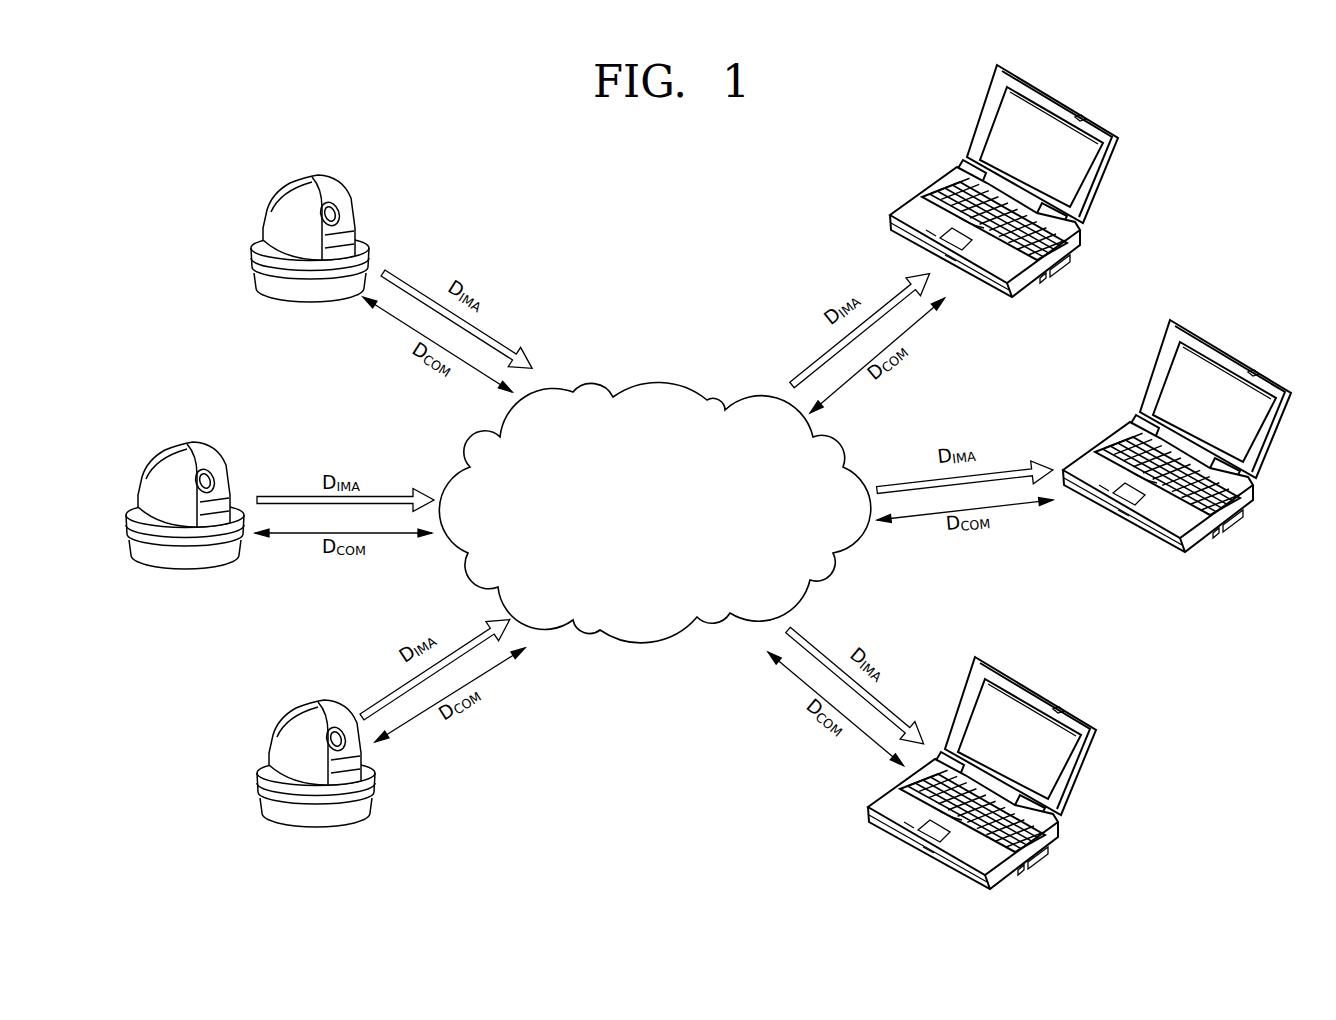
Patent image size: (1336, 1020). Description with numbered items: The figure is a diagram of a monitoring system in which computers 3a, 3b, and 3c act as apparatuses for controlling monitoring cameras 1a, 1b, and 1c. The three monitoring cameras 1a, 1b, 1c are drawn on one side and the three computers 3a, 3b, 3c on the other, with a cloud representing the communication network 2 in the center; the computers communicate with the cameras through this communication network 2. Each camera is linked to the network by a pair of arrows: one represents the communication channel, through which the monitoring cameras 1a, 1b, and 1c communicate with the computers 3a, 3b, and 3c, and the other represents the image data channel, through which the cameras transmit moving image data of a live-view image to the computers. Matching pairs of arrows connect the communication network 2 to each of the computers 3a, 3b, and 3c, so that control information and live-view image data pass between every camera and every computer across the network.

The monitoring camera 1a is at (283, 297).
The monitoring camera 1b is at (160, 566).
The monitoring camera 1c is at (290, 821).
The communication network 2 is at (655, 381).
The computer 3a is at (932, 193).
The computer 3b is at (1103, 444).
The computer 3c is at (889, 809).